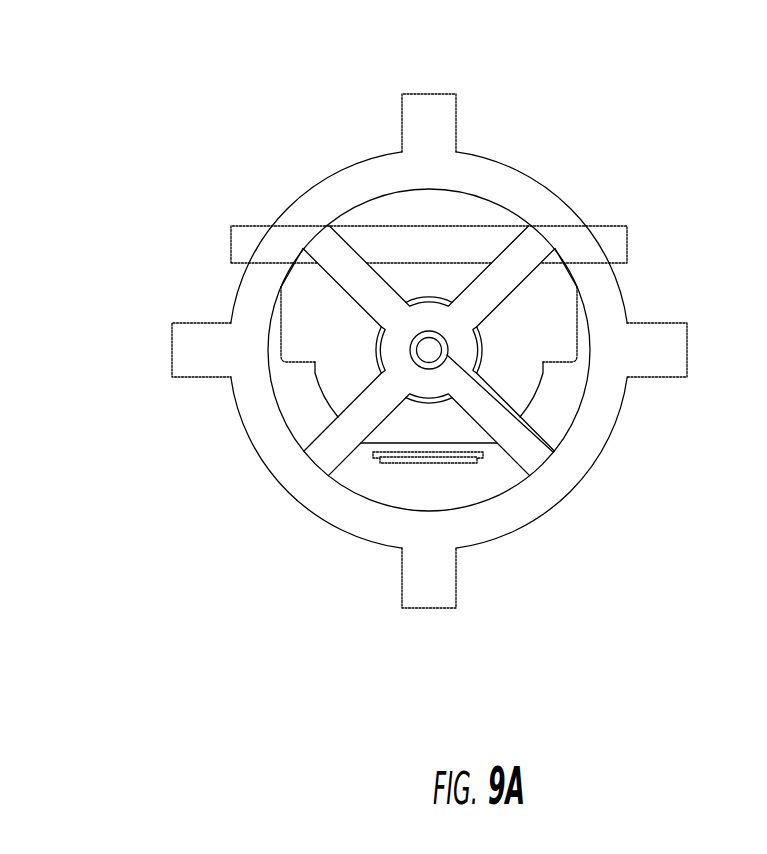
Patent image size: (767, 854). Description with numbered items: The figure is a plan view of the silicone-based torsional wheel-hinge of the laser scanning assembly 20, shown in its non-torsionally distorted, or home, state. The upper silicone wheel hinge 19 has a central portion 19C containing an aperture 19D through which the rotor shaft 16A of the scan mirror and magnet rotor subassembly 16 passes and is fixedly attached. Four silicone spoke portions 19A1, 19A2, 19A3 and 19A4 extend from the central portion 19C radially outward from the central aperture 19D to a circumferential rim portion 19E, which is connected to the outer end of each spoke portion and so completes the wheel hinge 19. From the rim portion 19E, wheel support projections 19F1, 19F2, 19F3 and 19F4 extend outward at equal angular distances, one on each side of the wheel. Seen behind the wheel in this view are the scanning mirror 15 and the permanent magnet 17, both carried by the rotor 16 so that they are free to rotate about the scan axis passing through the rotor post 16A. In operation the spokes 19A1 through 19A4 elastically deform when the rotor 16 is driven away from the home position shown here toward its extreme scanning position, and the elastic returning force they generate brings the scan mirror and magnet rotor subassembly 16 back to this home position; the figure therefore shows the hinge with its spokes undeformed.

The scanning mirror 15 is at (618, 240).
The scan mirror and magnet rotor subassembly 16 is at (563, 307).
The rotor post 16A is at (518, 450).
The permanent magnet 17 is at (400, 458).
The silicone wheel hinge 19 is at (527, 173).
The spoke portion 19A1 is at (347, 243).
The spoke portion 19A2 is at (517, 450).
The spoke portion 19A3 is at (503, 267).
The spoke portion 19A4 is at (333, 430).
The central portion 19C is at (397, 351).
The aperture 19D is at (429, 332).
The circumferential rim portion 19E is at (282, 243).
The wheel support projection 19F1 is at (438, 598).
The wheel support projection 19F2 is at (431, 104).
The wheel support projection 19F3 is at (190, 348).
The wheel support projection 19F4 is at (672, 340).
The laser scanning assembly 20 is at (255, 558).